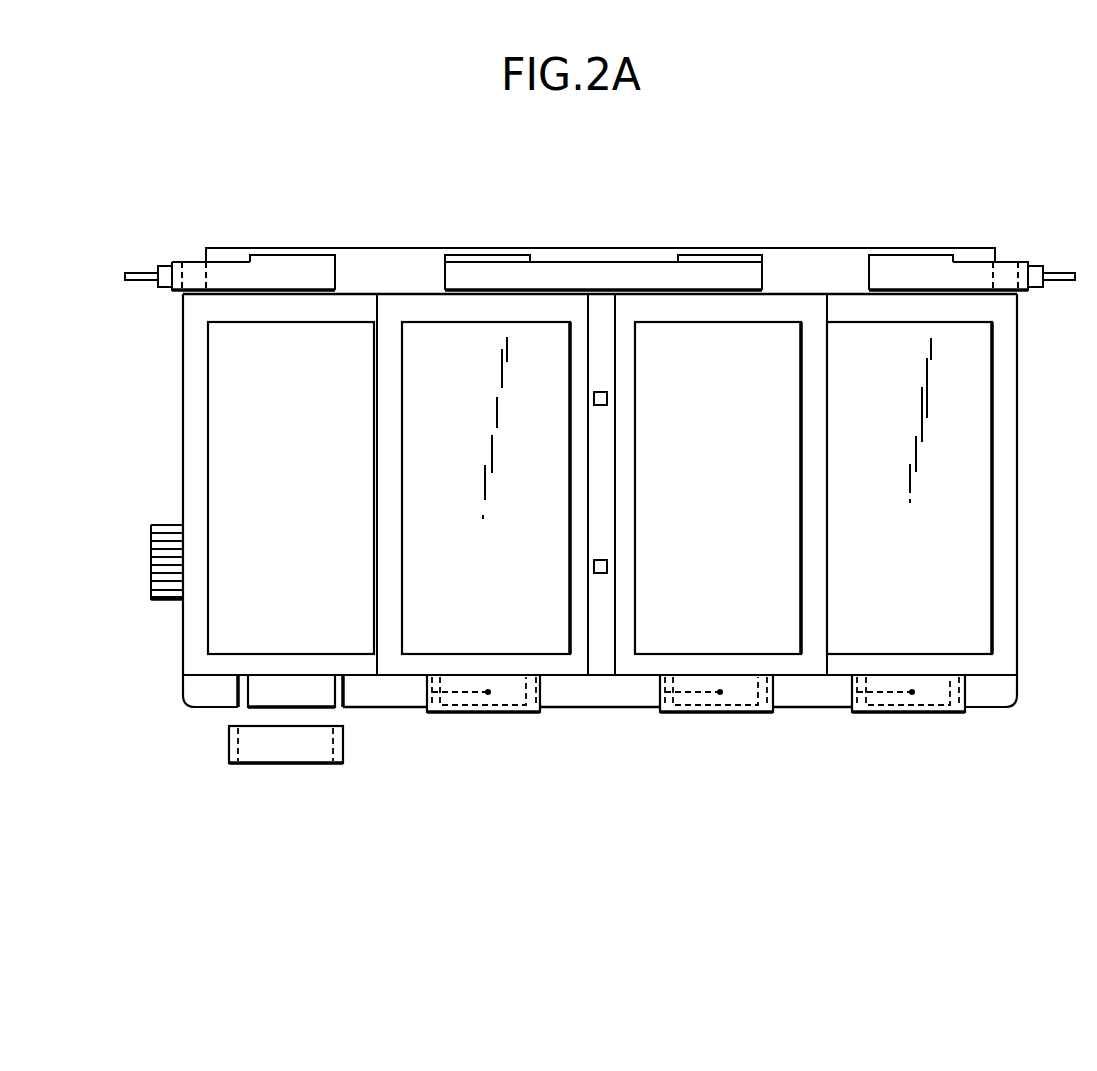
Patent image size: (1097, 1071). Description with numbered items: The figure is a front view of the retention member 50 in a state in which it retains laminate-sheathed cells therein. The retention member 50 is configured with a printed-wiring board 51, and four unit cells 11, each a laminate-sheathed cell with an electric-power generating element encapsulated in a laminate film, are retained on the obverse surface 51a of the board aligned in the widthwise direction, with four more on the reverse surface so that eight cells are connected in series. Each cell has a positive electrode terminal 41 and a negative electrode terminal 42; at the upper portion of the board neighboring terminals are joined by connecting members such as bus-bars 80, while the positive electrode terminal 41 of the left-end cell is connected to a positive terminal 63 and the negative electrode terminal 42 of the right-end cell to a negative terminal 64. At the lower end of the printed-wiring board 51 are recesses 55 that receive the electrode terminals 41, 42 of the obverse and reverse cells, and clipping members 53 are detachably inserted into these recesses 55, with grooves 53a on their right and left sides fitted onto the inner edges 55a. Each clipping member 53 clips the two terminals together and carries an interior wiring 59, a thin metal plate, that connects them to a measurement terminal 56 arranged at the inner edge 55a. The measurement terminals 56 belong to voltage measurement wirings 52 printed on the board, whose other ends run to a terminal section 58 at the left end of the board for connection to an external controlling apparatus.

The retention member 50 is at (838, 156).
The printed-wiring board 51 is at (817, 261).
The obverse surface 51a is at (1018, 680).
The unit cell 11 is at (353, 642).
The positive electrode terminal 41 is at (292, 257).
The negative electrode terminal 42 is at (487, 257).
The voltage measurement wiring 52 is at (142, 525).
The clipping member 53 is at (503, 712).
The groove 53a is at (232, 765).
The recess 55 is at (341, 675).
The inner edge 55a is at (245, 676).
The measurement terminal 56 is at (430, 692).
The terminal section 58 is at (165, 600).
The interior wiring 59 is at (467, 700).
The positive terminal 63 is at (140, 272).
The negative terminal 64 is at (1057, 272).
The bus-bar 80 is at (600, 265).